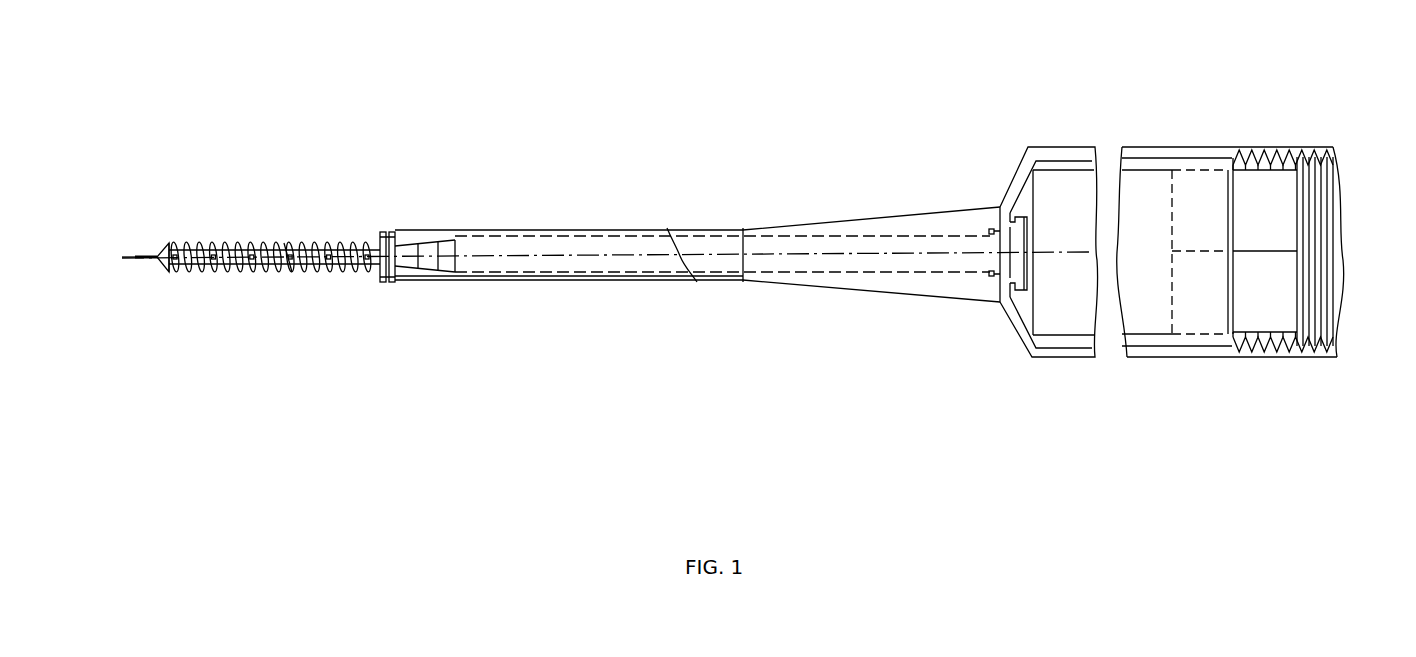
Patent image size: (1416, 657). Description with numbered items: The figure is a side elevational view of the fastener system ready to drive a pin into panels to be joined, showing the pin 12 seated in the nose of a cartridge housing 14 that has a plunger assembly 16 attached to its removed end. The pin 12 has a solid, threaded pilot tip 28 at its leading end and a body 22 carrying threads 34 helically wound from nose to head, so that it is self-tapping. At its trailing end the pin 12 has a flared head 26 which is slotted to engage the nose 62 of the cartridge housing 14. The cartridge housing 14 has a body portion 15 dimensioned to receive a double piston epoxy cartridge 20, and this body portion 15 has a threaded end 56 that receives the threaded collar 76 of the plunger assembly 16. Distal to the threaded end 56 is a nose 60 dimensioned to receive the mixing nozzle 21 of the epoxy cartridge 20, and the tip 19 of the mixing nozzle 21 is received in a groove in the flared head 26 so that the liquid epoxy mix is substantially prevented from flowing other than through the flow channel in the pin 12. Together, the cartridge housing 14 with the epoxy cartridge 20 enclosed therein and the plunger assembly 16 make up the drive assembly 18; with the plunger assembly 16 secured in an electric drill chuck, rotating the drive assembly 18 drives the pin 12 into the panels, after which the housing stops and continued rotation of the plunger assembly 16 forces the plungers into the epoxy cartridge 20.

The pin 12 is at (265, 273).
The cartridge housing 14 is at (1077, 357).
The body portion 15 is at (1195, 158).
The plunger assembly 16 is at (1323, 148).
The drive assembly 18 is at (997, 313).
The tip 19 is at (390, 282).
The epoxy cartridge 20 is at (1222, 345).
The mixing nozzle 21 is at (548, 265).
The body 22 is at (288, 242).
The flared head 26 is at (387, 233).
The pilot tip 28 is at (139, 262).
The threads 34 is at (178, 242).
The threaded end 56 is at (1247, 347).
The nose 60 is at (508, 230).
The nose 62 is at (393, 232).
The threaded collar 76 is at (1327, 343).